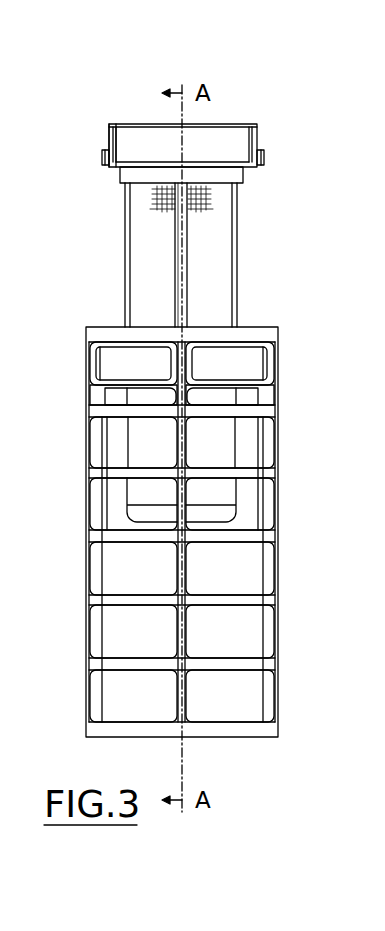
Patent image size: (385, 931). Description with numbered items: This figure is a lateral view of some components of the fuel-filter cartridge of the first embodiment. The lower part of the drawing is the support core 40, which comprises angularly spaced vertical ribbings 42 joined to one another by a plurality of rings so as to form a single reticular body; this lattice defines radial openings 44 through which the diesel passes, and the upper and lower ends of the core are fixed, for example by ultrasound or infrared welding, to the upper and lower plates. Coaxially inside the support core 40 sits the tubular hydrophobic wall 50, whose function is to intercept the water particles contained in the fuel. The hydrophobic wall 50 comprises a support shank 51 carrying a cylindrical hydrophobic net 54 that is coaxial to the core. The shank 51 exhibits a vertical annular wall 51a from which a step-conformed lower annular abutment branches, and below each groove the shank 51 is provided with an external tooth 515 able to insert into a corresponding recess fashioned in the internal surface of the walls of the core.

The support shank 51 is at (256, 130).
The vertical annular wall 51a is at (110, 138).
The external tooth 515 is at (104, 167).
The hydrophobic wall 50 is at (237, 271).
The hydrophobic net 54 is at (166, 292).
The support core 40 is at (278, 448).
The vertical ribbings 42 is at (278, 631).
The radial openings 44 is at (151, 582).